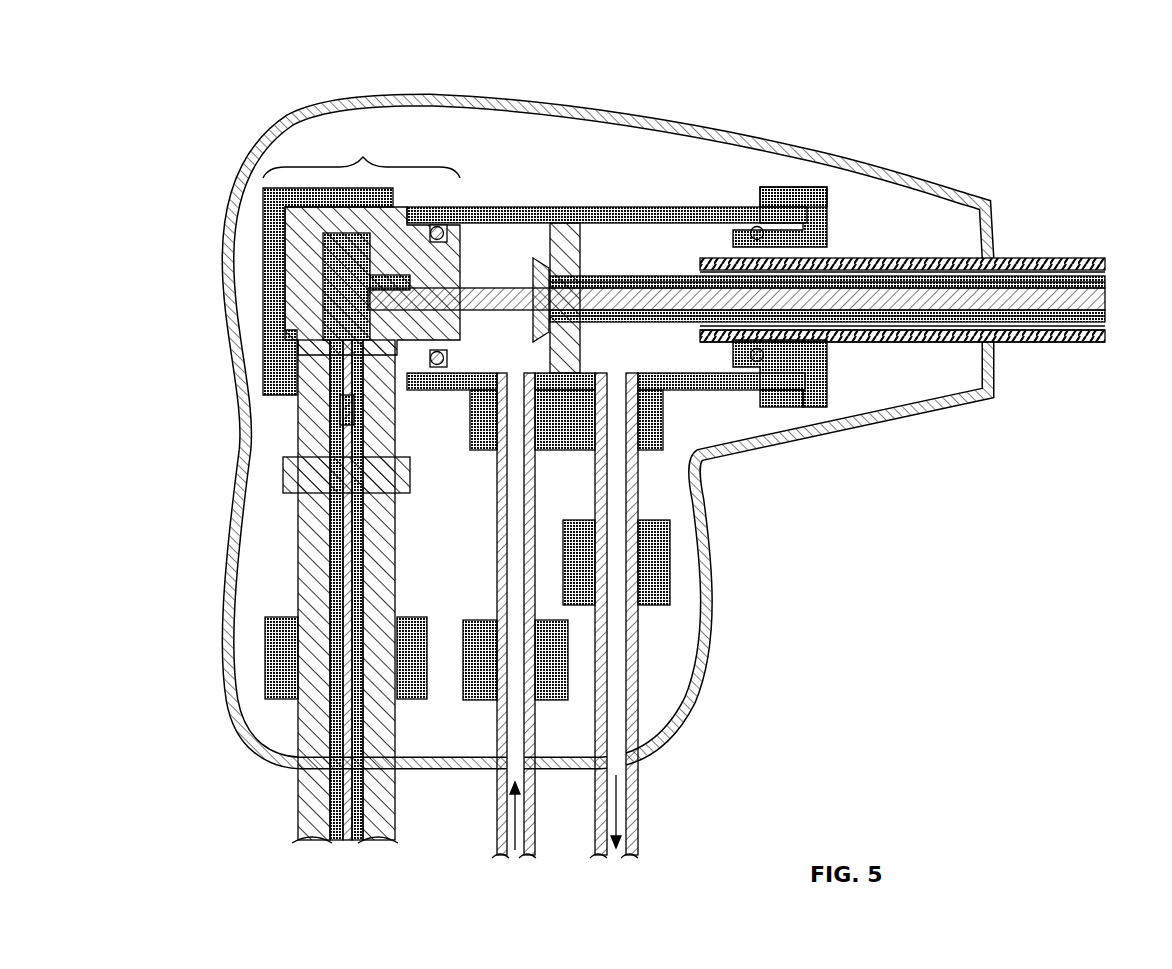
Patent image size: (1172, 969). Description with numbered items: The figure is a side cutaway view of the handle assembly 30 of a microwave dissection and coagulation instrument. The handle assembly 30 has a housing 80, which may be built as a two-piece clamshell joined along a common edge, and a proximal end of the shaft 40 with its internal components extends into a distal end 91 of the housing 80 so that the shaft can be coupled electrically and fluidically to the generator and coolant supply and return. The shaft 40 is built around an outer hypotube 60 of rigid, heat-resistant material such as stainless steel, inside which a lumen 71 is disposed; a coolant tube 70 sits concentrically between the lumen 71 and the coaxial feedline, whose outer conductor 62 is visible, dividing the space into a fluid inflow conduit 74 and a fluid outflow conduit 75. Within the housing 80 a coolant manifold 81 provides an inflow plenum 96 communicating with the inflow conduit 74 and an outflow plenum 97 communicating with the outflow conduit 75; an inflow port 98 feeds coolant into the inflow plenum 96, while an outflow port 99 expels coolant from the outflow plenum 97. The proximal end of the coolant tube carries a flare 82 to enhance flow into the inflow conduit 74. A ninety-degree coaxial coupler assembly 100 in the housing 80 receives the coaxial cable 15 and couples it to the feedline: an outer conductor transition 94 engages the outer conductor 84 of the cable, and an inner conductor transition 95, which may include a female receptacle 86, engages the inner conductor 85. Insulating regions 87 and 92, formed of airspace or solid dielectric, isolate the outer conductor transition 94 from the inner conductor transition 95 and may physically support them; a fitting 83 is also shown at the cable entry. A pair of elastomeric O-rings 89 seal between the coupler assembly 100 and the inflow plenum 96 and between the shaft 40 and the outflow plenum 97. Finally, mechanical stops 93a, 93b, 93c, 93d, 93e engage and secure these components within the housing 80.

The coaxial cable 15 is at (298, 809).
The handle assembly 30 is at (888, 52).
The shaft 40 is at (1075, 158).
The outer hypotube 60 is at (1055, 262).
The outer conductor 62 is at (1040, 332).
The coolant tube 70 is at (955, 275).
The lumen 71 is at (1105, 280).
The fluid inflow conduit 74 is at (600, 290).
The fluid outflow conduit 75 is at (655, 278).
The housing 80 is at (818, 400).
The coolant manifold 81 is at (708, 215).
The flare 82 is at (540, 265).
The nut 83 is at (297, 463).
The outer conductor 84 is at (313, 535).
The inner conductor 85 is at (310, 590).
The female receptacle 86 is at (327, 425).
The insulating region 87 is at (335, 222).
The elastomeric O-ring 89 is at (440, 352).
The distal end of housing 91 is at (990, 225).
The insulating region 92 is at (335, 402).
The mechanical stop 93a is at (272, 268).
The mechanical stop 93b is at (280, 665).
The mechanical stop 93c is at (480, 700).
The mechanical stop 93d is at (583, 600).
The mechanical stop 93e is at (800, 195).
The outer conductor transition 94 is at (265, 195).
The inner conductor transition 95 is at (300, 356).
The inflow plenum 96 is at (497, 343).
The outflow plenum 97 is at (622, 347).
The inflow port 98 is at (517, 537).
The outflow port 99 is at (617, 497).
The coaxial coupler assembly 100 is at (363, 160).